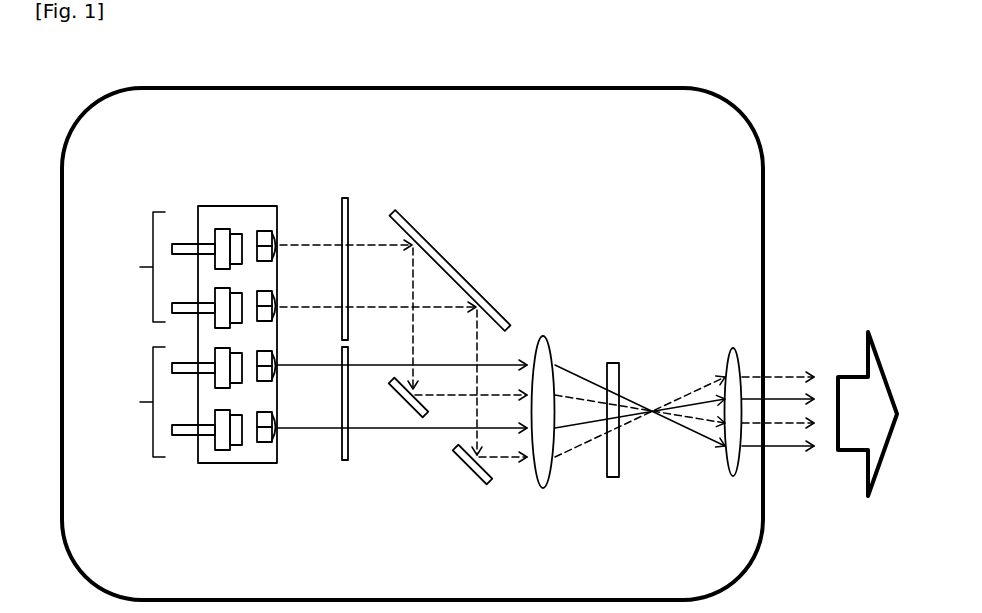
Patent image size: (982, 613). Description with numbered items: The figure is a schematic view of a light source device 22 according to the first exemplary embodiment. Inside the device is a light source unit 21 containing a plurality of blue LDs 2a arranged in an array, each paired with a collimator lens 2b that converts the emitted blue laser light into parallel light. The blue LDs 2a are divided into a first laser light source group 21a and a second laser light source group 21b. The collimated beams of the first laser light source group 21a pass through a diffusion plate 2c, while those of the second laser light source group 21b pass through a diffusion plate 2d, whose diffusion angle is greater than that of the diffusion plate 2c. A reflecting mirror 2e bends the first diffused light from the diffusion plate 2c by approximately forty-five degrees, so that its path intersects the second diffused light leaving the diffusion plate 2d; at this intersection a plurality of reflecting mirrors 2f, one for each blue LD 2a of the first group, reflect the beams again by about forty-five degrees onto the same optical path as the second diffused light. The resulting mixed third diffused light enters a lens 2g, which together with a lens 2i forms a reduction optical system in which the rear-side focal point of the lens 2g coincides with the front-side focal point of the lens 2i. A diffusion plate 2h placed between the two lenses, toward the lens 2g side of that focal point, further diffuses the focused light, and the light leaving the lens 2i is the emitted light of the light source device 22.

The light source unit 21 is at (222, 200).
The first laser light source group 21a is at (130, 267).
The second laser light source group 21b is at (130, 402).
The blue LD 2a is at (223, 450).
The collimator lens 2b is at (262, 442).
The diffusion plate 2c is at (346, 198).
The diffusion plate 2d is at (343, 462).
The reflecting mirror 2e is at (447, 257).
The reflecting mirror 2f is at (408, 412).
The lens 2g is at (545, 337).
The diffusion plate 2h is at (614, 363).
The lens 2i is at (710, 478).
The light source device 22 is at (763, 185).